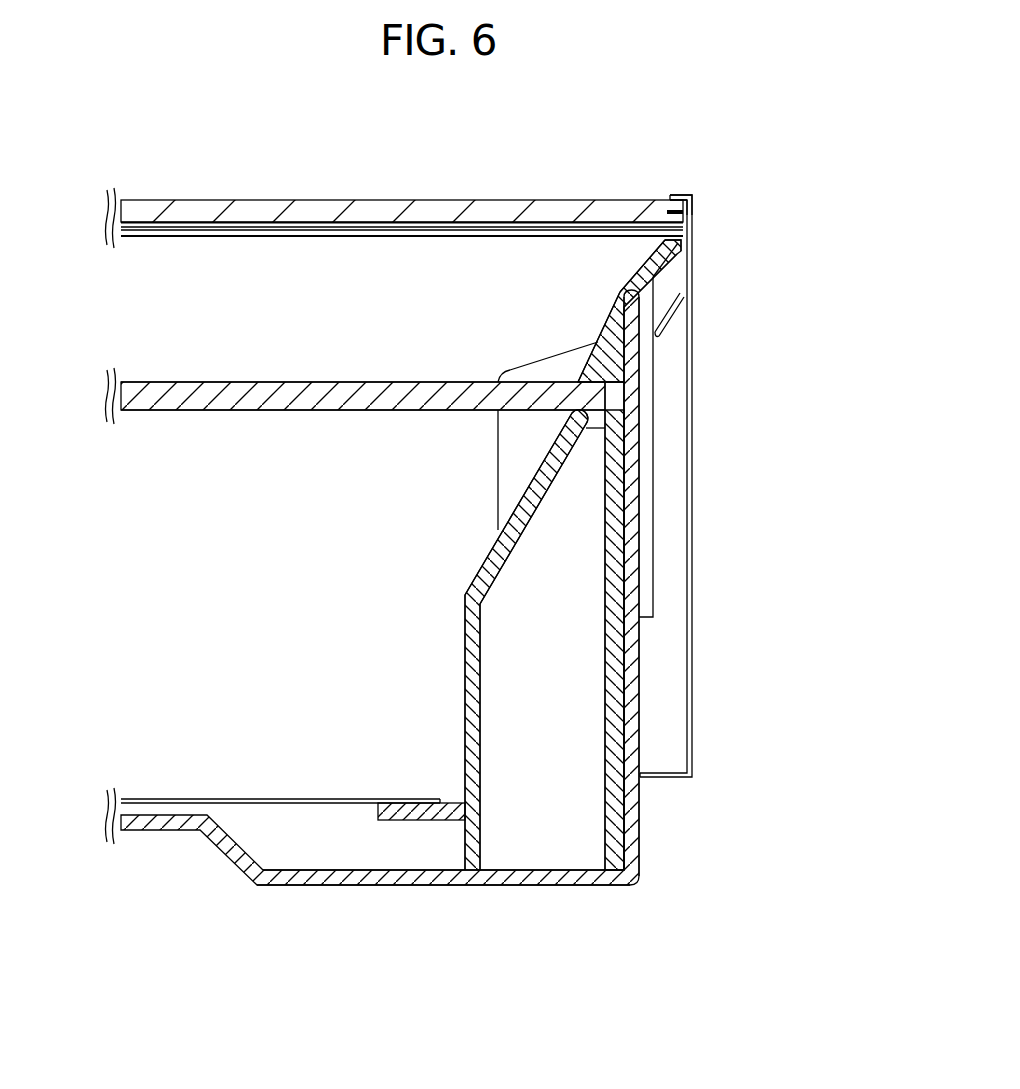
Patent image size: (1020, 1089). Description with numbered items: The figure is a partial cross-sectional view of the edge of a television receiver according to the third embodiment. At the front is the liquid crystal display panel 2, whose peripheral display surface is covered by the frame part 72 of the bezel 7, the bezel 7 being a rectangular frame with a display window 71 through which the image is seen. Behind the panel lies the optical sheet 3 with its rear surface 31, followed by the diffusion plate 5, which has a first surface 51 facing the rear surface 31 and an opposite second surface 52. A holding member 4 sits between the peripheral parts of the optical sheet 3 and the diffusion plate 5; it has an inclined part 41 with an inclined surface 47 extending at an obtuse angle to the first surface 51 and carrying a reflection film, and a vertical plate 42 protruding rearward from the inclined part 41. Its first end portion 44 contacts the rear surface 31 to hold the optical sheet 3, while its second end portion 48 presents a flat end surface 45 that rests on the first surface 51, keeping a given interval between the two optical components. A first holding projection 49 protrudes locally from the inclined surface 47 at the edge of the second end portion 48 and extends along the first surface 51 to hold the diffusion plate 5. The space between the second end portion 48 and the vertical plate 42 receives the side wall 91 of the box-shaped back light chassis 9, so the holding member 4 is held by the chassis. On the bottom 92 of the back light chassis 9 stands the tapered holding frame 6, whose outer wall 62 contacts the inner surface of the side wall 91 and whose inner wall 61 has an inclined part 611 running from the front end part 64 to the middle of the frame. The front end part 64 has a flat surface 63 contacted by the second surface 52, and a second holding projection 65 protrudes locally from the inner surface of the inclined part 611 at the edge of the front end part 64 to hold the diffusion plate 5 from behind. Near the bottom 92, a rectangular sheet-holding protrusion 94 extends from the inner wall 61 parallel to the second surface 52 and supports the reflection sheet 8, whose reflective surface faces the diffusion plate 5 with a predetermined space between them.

The liquid crystal display panel 2 is at (372, 205).
The optical sheet 3 is at (190, 231).
The rear surface 31 is at (150, 238).
The holding member 4 is at (600, 303).
The inclined part 41 is at (642, 278).
The vertical plate 42 is at (650, 568).
The first end portion 44 is at (674, 240).
The end surface 45 is at (568, 392).
The inclined surface 47 is at (598, 332).
The second end portion 48 is at (640, 388).
The first holding projection 49 is at (502, 372).
The diffusion plate 5 is at (237, 380).
The first surface 51 is at (380, 380).
The second surface 52 is at (298, 412).
The holding frame 6 is at (486, 557).
The inner wall 61 is at (470, 660).
The inclined part 611 is at (520, 515).
The outer wall 62 is at (616, 835).
The flat surface 63 is at (576, 437).
The front end part 64 is at (600, 423).
The second holding projection 65 is at (520, 430).
The bezel 7 is at (692, 495).
The display window 71 is at (668, 196).
The frame part 72 is at (690, 196).
The reflection sheet 8 is at (165, 798).
The back light chassis 9 is at (570, 888).
The side wall 91 is at (641, 675).
The bottom 92 is at (500, 888).
The sheet-holding protrusion 94 is at (385, 801).